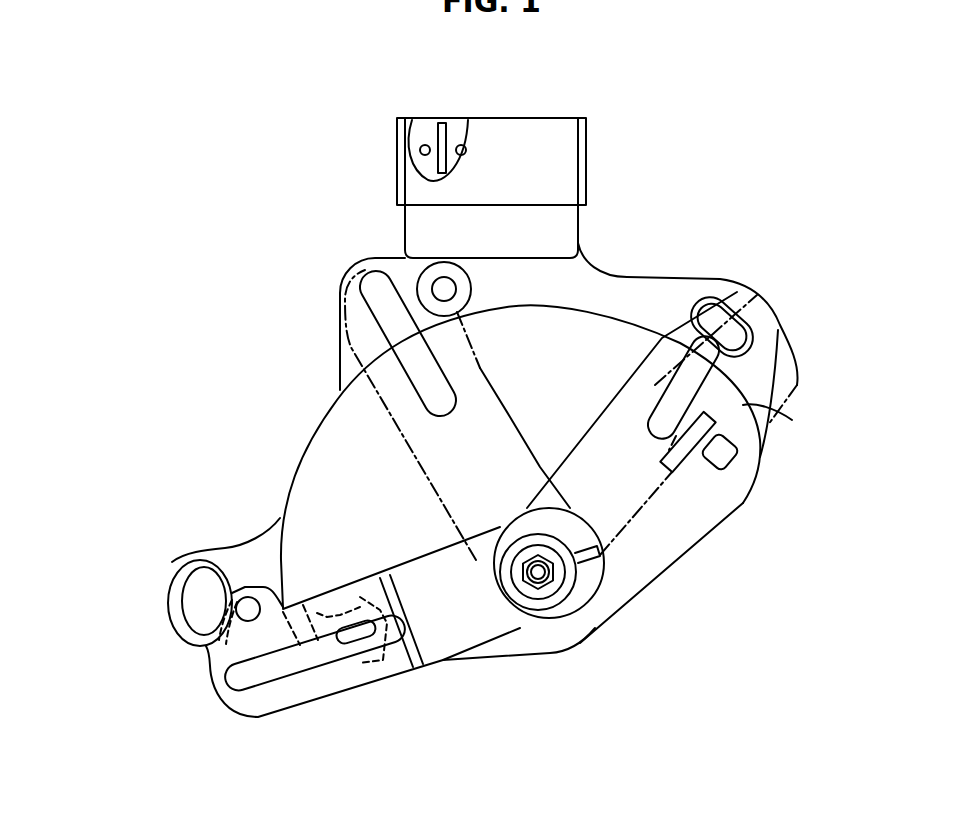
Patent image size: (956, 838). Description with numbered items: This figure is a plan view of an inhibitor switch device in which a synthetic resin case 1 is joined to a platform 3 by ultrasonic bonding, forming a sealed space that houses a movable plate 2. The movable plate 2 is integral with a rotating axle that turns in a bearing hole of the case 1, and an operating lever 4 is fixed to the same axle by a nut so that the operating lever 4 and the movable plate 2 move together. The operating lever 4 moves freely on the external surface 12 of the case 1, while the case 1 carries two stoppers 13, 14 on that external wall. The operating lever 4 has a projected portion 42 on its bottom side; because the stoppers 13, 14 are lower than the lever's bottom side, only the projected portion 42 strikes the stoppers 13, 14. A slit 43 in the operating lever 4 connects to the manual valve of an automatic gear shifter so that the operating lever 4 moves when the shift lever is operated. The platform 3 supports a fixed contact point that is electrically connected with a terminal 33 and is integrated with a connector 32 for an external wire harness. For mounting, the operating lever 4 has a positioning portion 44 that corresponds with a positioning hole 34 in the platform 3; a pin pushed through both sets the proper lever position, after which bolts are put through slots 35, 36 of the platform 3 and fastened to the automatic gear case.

The case 1 is at (665, 580).
The movable plate 2 is at (546, 580).
The platform 3 is at (633, 272).
The operating lever 4 is at (312, 713).
The external surface 12 is at (672, 527).
The stopper 13 is at (356, 634).
The stopper 14 is at (717, 460).
The connector 32 is at (587, 153).
The terminal 33 is at (424, 118).
The positioning hole 34 is at (444, 289).
The slot 35 is at (195, 592).
The slot 36 is at (737, 288).
The projected portion 42 is at (765, 440).
The slit 43 is at (235, 680).
The positioning portion 44 is at (244, 597).